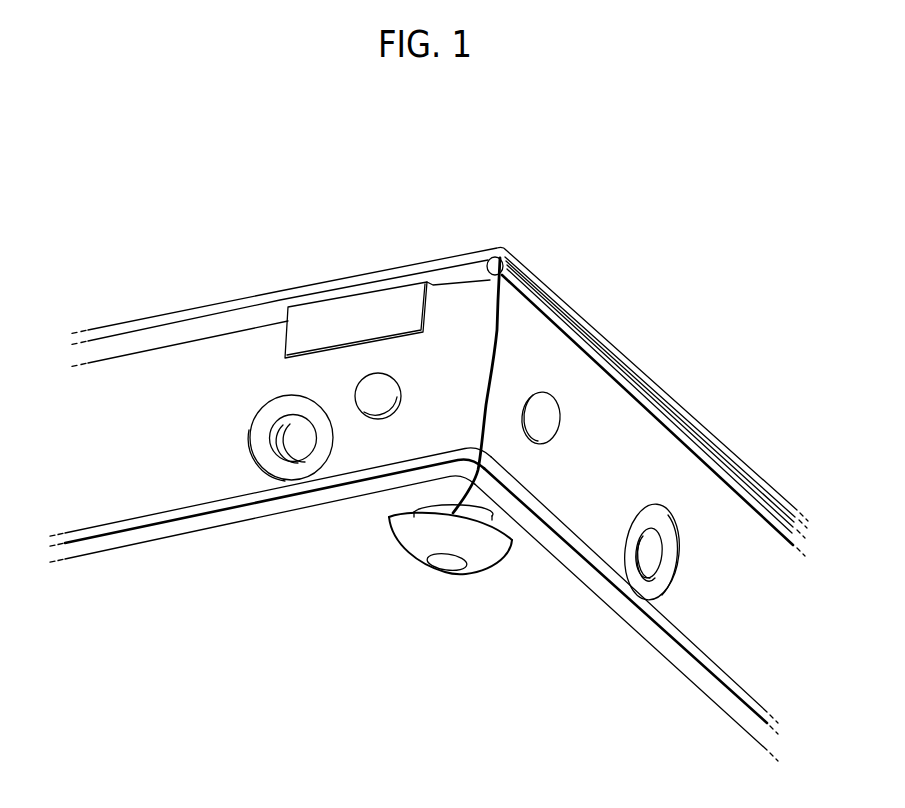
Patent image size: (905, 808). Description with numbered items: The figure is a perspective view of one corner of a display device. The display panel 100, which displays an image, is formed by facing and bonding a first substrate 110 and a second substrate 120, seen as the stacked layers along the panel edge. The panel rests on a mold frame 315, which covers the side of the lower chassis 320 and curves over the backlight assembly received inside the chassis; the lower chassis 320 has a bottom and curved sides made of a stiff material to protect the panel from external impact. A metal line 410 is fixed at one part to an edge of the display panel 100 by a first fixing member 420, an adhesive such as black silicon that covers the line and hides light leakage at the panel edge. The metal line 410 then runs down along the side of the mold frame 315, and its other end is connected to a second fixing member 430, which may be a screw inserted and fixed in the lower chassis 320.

The display panel 100 is at (440, 401).
The first substrate 110 is at (640, 396).
The second substrate 120 is at (625, 360).
The mold frame 315 is at (710, 623).
The lower chassis 320 is at (414, 578).
The metal line 410 is at (500, 335).
The first fixing member 420 is at (445, 280).
The second fixing member 430 is at (410, 556).